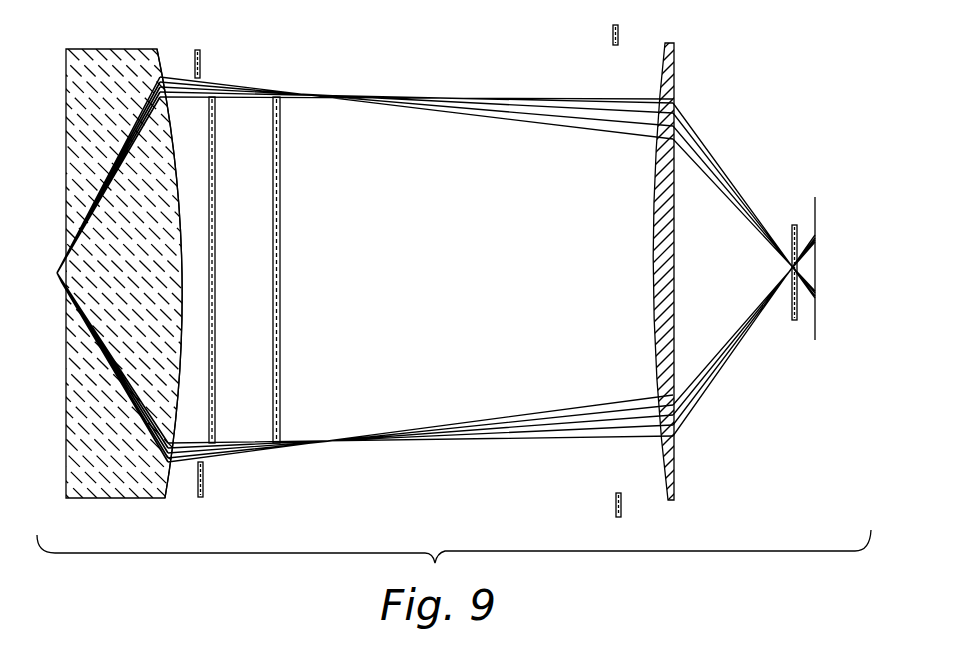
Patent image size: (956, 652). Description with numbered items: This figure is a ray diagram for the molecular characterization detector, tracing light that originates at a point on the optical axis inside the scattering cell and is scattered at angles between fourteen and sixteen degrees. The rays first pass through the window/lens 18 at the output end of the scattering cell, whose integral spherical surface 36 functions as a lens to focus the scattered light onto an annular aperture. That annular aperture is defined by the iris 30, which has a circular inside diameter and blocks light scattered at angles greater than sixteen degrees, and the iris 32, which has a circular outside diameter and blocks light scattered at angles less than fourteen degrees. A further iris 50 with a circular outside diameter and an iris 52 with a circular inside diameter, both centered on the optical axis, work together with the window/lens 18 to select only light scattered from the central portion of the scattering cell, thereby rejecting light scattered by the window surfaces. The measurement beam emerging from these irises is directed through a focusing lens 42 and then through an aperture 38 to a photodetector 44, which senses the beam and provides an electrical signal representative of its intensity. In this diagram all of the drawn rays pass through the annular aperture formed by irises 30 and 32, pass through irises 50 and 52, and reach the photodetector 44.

The window/lens 18 is at (122, 49).
The iris 30 is at (199, 65).
The iris 32 is at (218, 262).
The spherical surface 36 is at (175, 172).
The aperture 38 is at (792, 227).
The focusing lens 42 is at (652, 240).
The photodetector 44 is at (813, 340).
The iris 50 is at (283, 258).
The iris 52 is at (618, 31).